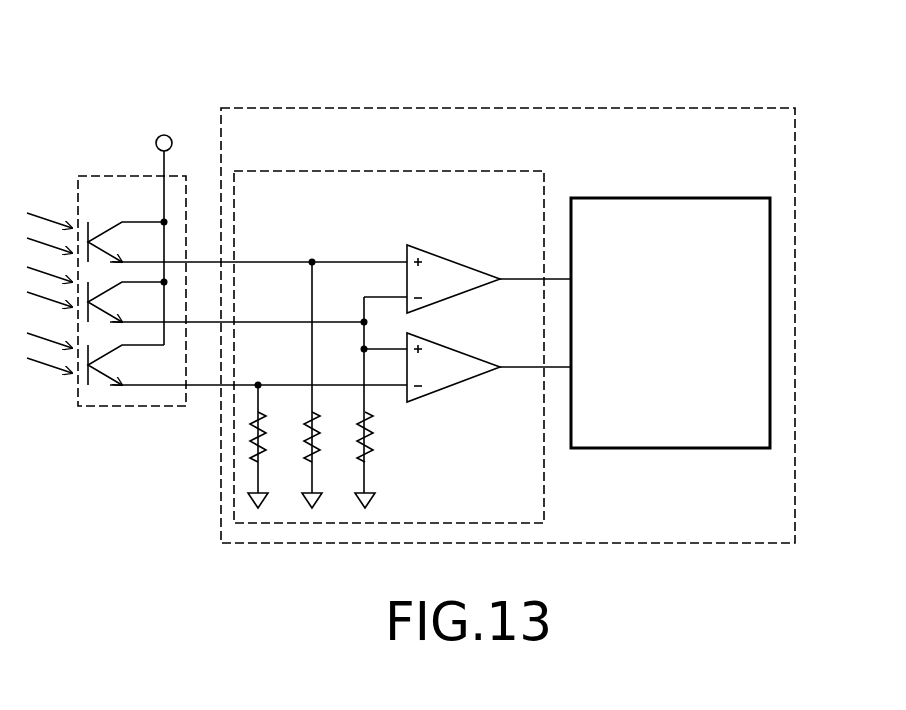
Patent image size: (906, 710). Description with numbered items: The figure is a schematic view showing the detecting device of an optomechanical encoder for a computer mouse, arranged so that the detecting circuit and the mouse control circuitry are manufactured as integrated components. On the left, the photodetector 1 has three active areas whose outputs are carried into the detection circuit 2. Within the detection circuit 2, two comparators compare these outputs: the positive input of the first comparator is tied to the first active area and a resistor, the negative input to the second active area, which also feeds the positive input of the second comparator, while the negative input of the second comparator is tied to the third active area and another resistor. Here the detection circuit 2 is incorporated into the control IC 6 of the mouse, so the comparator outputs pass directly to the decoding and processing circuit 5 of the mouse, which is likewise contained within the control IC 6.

The photodetector 1 is at (118, 190).
The detection circuit 2 is at (284, 178).
The decoding and processing circuit 5 is at (643, 218).
The control IC of a mouse 6 is at (770, 525).